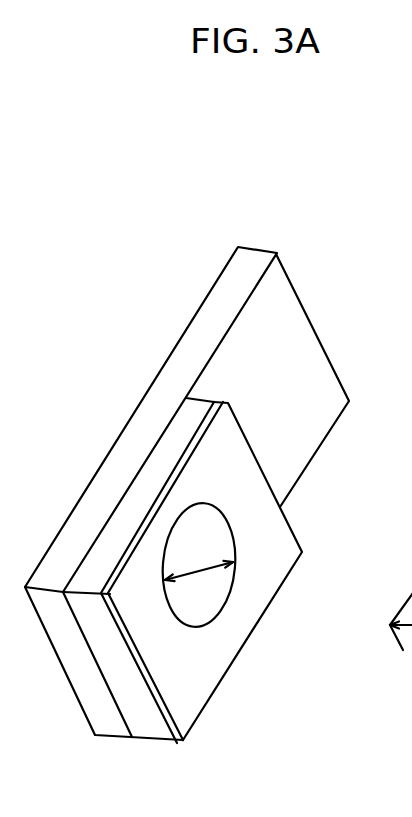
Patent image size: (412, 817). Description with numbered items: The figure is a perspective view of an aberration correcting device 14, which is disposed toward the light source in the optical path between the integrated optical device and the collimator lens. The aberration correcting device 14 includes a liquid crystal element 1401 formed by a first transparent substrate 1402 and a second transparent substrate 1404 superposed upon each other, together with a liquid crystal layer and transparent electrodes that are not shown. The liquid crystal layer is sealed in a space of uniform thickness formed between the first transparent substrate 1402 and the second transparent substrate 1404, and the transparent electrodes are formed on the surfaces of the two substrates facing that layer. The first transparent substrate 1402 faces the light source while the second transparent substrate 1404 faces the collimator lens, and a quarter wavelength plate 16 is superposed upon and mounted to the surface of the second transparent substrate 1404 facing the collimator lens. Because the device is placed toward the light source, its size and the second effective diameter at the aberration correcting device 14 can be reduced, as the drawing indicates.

The aberration correcting device 14 is at (270, 182).
The liquid crystal element 1401 is at (215, 428).
The first transparent substrate 1402 is at (247, 263).
The second transparent substrate 1404 is at (193, 413).
The ¼ wavelength plate 16 is at (227, 460).